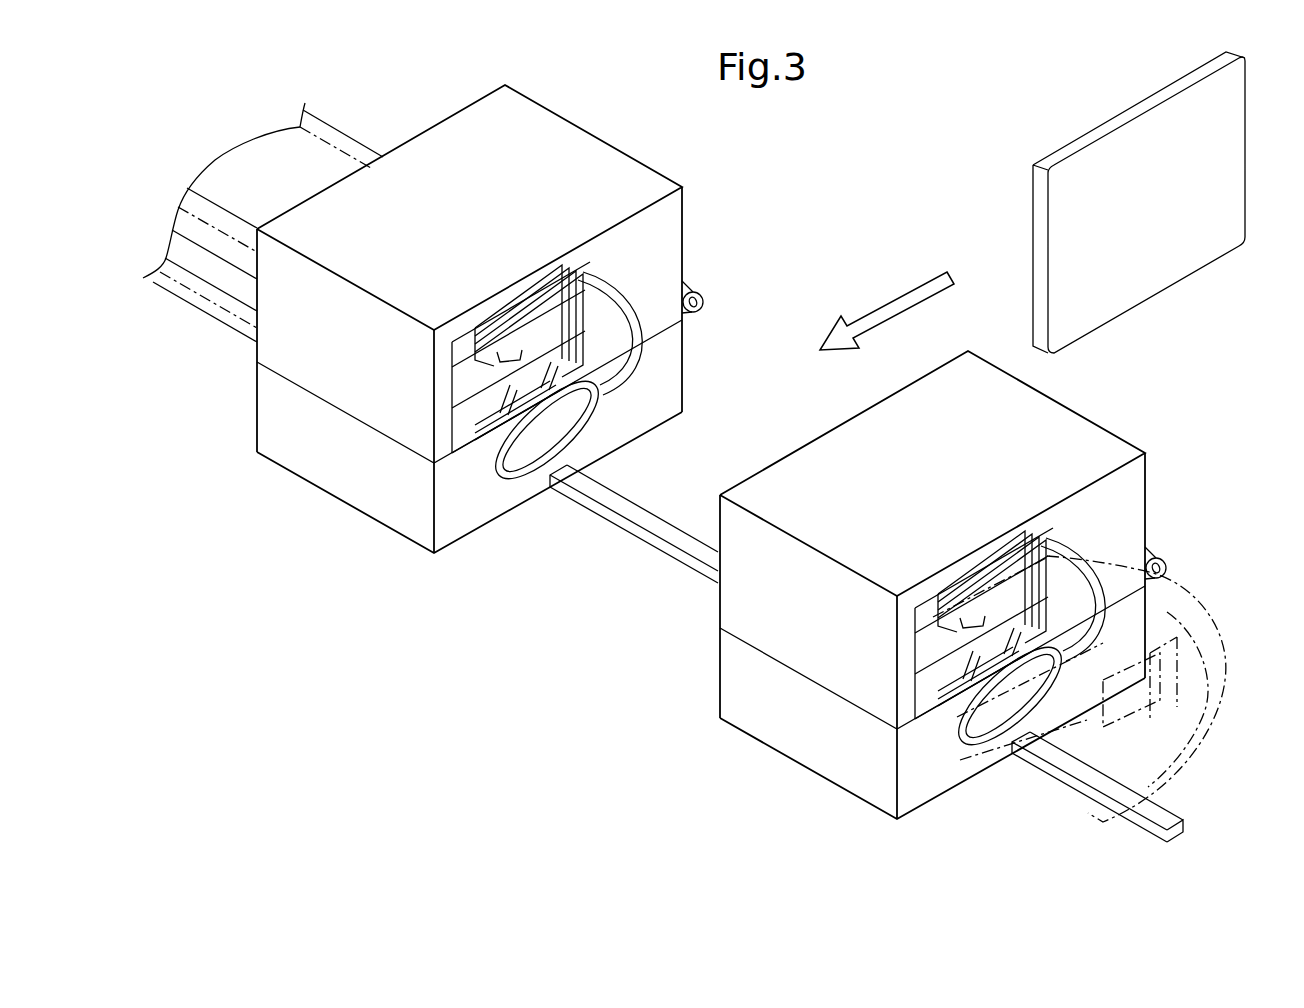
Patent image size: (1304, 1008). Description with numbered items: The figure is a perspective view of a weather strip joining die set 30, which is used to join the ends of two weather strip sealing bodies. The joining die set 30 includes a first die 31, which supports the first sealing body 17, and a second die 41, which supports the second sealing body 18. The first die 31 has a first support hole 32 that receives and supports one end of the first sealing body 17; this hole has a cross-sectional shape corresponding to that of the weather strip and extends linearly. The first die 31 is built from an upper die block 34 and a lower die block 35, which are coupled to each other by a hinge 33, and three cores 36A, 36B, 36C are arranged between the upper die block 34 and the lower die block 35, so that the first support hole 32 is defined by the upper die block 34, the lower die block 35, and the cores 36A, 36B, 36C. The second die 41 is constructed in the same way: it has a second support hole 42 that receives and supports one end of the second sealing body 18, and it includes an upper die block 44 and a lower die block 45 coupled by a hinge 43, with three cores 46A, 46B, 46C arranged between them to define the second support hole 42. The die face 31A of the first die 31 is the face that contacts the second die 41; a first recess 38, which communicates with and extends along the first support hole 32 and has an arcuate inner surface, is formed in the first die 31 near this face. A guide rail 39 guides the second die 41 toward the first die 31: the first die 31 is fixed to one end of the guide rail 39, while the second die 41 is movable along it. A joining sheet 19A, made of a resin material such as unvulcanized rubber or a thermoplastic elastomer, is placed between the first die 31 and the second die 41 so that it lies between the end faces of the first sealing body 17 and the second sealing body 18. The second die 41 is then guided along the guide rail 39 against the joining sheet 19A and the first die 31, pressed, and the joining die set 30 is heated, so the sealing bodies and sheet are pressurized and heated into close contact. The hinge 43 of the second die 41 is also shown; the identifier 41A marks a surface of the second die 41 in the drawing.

The first sealing body 17 is at (356, 135).
The second sealing body 18 is at (970, 748).
The joining sheet 19A is at (1160, 262).
The joining die set 30 is at (405, 673).
The first die 31 is at (516, 319).
The die face 31A is at (662, 238).
The first support hole 32 is at (605, 392).
The hinge 33 is at (705, 302).
The upper die block 34 is at (612, 142).
The lower die block 35 is at (683, 363).
The core 36A is at (452, 362).
The core 36B is at (452, 393).
The core 36C is at (448, 427).
The first recess 38 is at (528, 308).
The guide rail 39 is at (628, 535).
The second die 41 is at (978, 569).
The side face of second housing 41A is at (905, 395).
The second support hole 42 is at (1040, 618).
The hinge 43 is at (1168, 568).
The upper die block 44 is at (1113, 432).
The lower die block 45 is at (1160, 593).
The core 46A is at (915, 628).
The core 46B is at (915, 659).
The core 46C is at (910, 693).